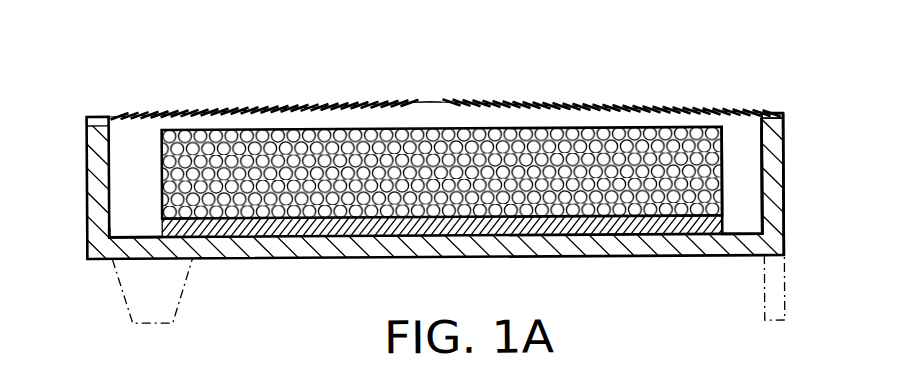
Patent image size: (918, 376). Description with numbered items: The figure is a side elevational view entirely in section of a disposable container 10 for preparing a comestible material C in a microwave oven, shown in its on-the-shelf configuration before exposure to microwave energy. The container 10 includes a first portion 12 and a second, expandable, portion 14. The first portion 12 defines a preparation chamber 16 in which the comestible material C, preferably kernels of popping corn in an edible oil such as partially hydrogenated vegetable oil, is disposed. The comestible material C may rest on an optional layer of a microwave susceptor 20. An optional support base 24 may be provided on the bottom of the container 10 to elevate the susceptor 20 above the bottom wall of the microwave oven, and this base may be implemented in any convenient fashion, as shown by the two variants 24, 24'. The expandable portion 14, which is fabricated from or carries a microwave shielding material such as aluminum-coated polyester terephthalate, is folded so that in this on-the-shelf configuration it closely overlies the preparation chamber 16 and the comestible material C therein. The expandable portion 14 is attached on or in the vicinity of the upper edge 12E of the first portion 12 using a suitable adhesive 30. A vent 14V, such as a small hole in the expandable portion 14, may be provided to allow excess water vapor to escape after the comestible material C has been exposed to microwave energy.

The disposable container 10 is at (195, 58).
The first portion 12 is at (75, 132).
The upper edge 12E is at (784, 135).
The second, expandable, portion 14 is at (338, 102).
The vent 14V is at (437, 98).
The preparation chamber 16 is at (737, 180).
The microwave susceptor 20 is at (476, 240).
The support base 24 is at (742, 287).
The support base 24' is at (186, 293).
The adhesive 30 is at (767, 110).
The comestible material C is at (162, 195).